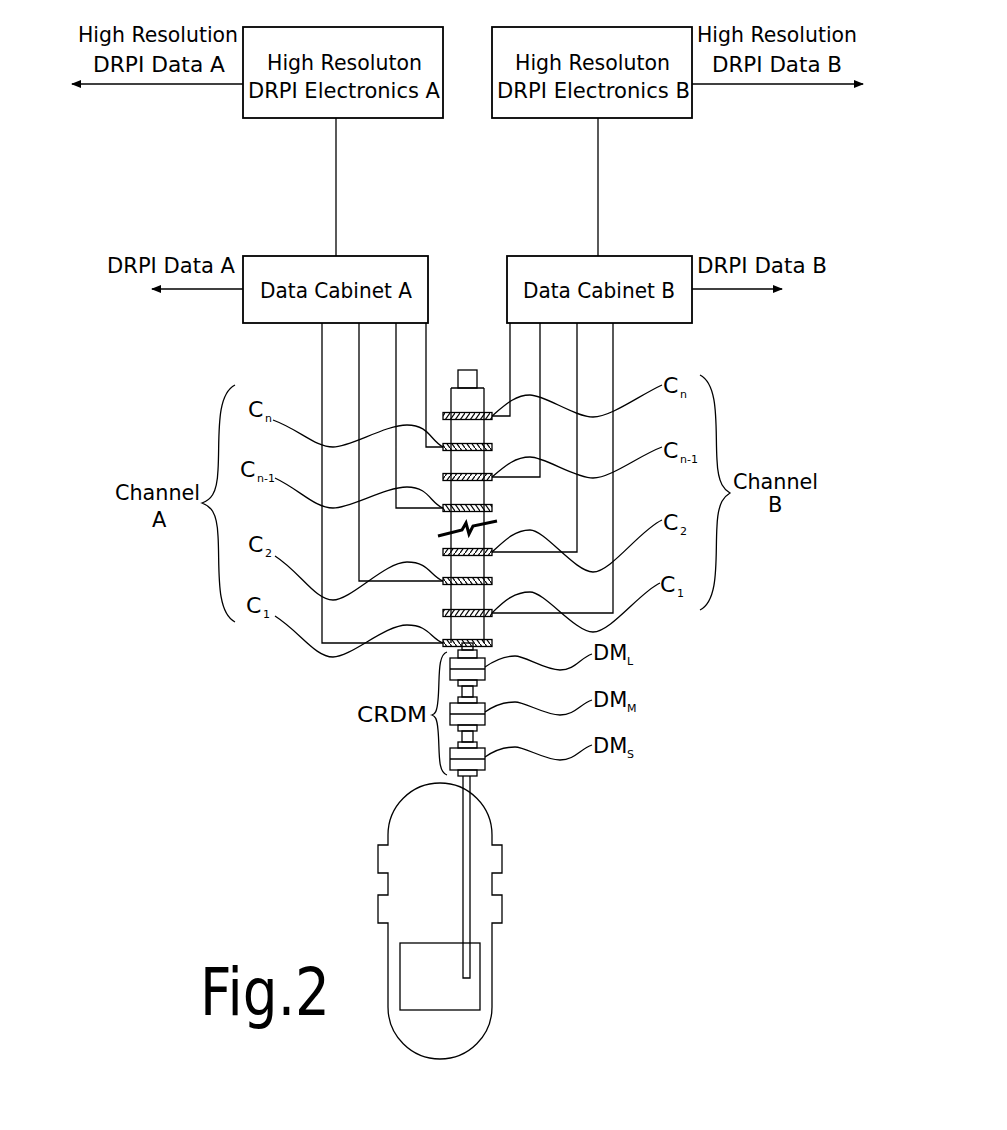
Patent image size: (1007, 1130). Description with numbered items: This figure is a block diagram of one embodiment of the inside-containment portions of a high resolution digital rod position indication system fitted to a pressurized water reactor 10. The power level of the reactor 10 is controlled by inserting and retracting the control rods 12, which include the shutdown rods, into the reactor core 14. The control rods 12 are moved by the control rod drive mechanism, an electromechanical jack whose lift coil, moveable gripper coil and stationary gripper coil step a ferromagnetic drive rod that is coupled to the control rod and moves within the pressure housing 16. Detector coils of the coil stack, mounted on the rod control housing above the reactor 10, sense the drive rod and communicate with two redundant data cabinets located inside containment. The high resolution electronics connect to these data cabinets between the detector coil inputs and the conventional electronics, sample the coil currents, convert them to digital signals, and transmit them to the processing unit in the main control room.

The reactor 10 is at (492, 830).
The control rods 12 is at (468, 908).
The reactor core 14 is at (470, 1000).
The pressure housing 16 is at (464, 370).